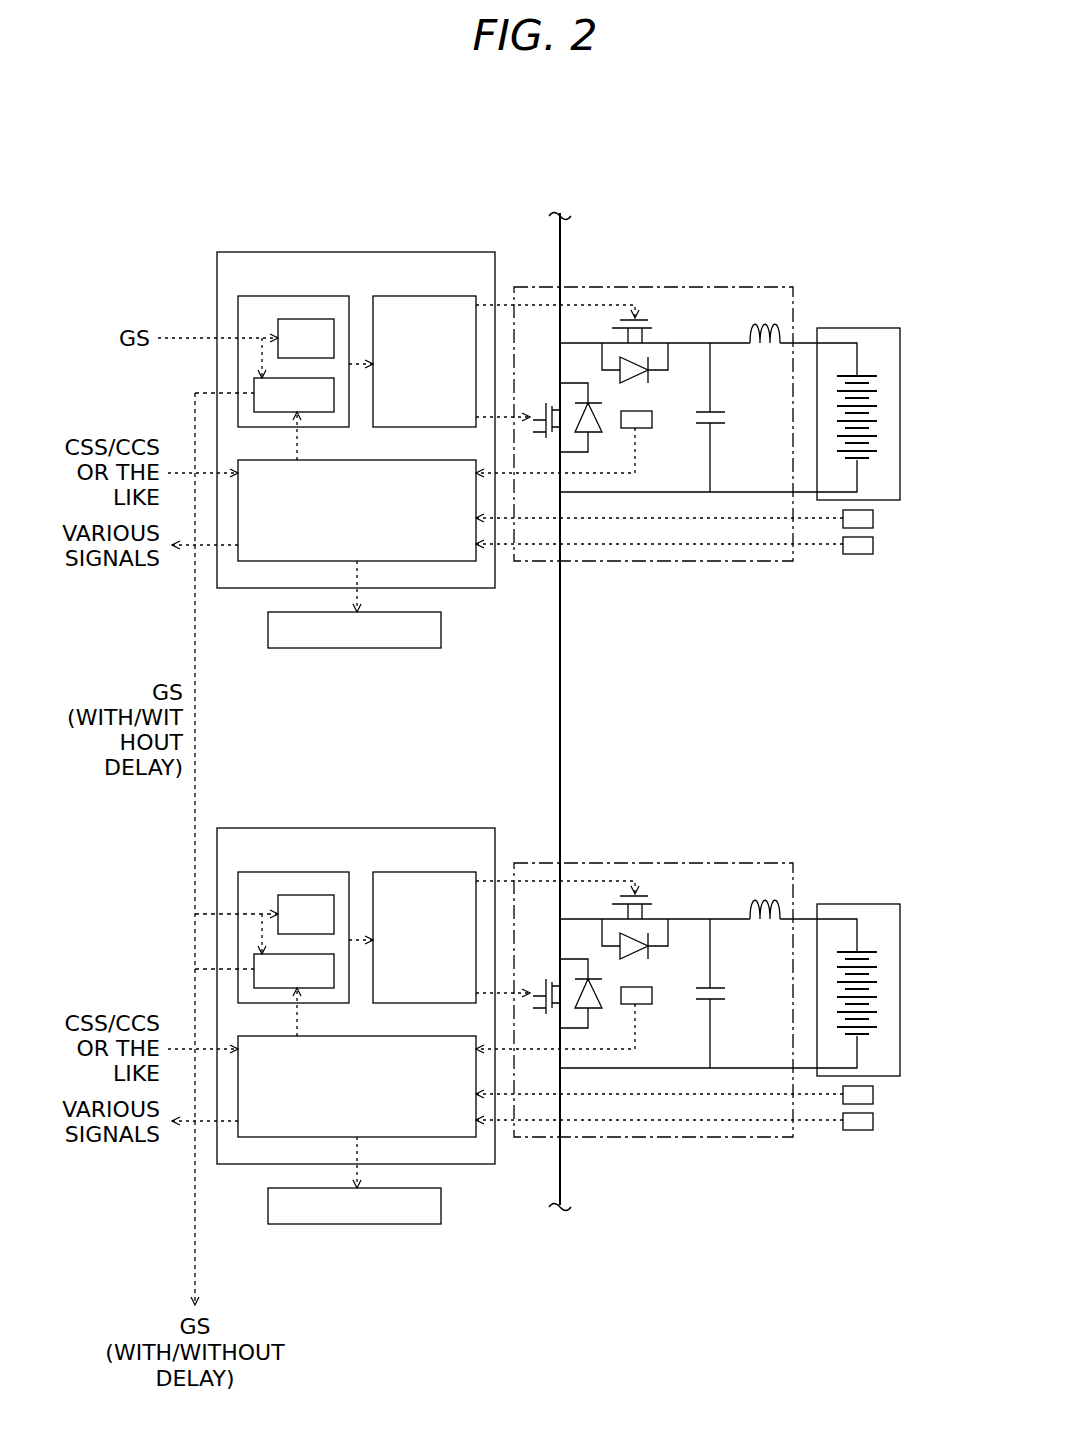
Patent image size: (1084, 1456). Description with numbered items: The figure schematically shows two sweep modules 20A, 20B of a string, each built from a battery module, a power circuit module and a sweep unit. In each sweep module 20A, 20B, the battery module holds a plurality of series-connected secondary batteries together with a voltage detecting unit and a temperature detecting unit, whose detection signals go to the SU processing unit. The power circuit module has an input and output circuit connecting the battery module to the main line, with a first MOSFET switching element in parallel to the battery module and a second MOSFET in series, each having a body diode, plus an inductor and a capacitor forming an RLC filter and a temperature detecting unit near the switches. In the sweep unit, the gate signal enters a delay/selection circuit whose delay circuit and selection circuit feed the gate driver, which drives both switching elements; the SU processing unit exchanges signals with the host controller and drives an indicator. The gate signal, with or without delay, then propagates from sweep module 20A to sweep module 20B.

The sweep module 20A is at (767, 176).
The sweep module 20B is at (838, 739).